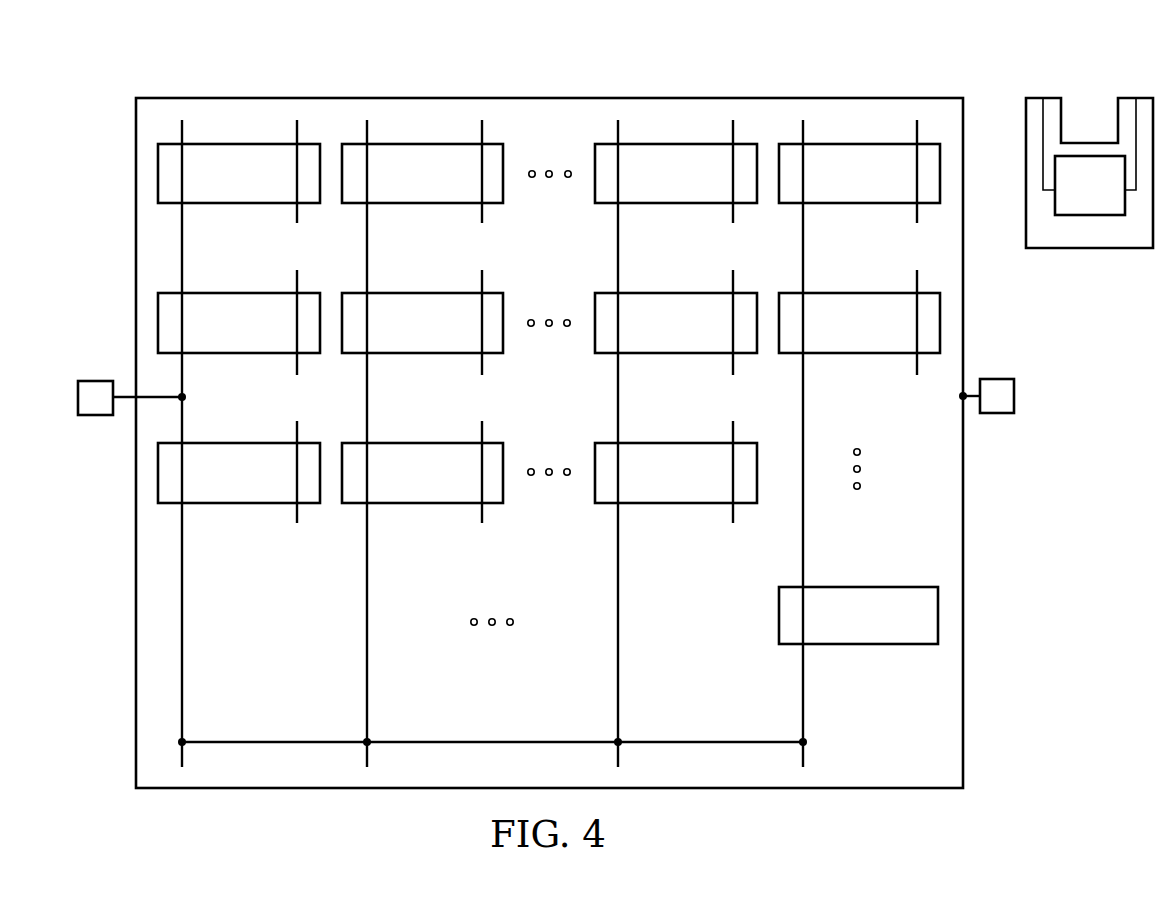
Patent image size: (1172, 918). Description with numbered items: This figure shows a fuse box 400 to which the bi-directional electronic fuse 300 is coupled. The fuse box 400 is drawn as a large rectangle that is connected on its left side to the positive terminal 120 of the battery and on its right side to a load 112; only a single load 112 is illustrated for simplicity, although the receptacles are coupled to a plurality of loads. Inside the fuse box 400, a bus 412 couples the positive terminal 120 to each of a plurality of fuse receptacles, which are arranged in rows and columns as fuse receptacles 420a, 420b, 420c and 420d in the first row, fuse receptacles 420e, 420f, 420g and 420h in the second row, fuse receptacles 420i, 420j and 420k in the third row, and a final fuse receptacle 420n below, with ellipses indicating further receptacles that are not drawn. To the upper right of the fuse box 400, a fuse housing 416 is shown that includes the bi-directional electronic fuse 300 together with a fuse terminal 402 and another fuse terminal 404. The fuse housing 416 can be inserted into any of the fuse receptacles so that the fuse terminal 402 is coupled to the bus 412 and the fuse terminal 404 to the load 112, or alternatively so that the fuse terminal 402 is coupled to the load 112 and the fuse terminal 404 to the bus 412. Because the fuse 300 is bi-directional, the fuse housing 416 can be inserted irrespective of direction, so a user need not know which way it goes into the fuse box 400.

The fuse box 400 is at (294, 98).
The fuse terminal 402 is at (1037, 108).
The fuse terminal 404 is at (1128, 108).
The bi-directional electronic fuse 300 is at (1069, 202).
The fuse housing 416 is at (1089, 251).
The positive terminal 120 is at (97, 380).
The load 112 is at (998, 379).
The bus 412 is at (183, 618).
The fuse receptacle 420a is at (210, 190).
The fuse receptacle 420b is at (394, 190).
The fuse receptacle 420c is at (647, 190).
The fuse receptacle 420d is at (830, 190).
The fuse receptacle 420e is at (210, 340).
The fuse receptacle 420f is at (394, 340).
The fuse receptacle 420g is at (647, 340).
The fuse receptacle 420h is at (830, 340).
The fuse receptacle 420i is at (213, 490).
The fuse receptacle 420j is at (397, 490).
The fuse receptacle 420k is at (647, 490).
The fuse receptacle 420n is at (830, 632).